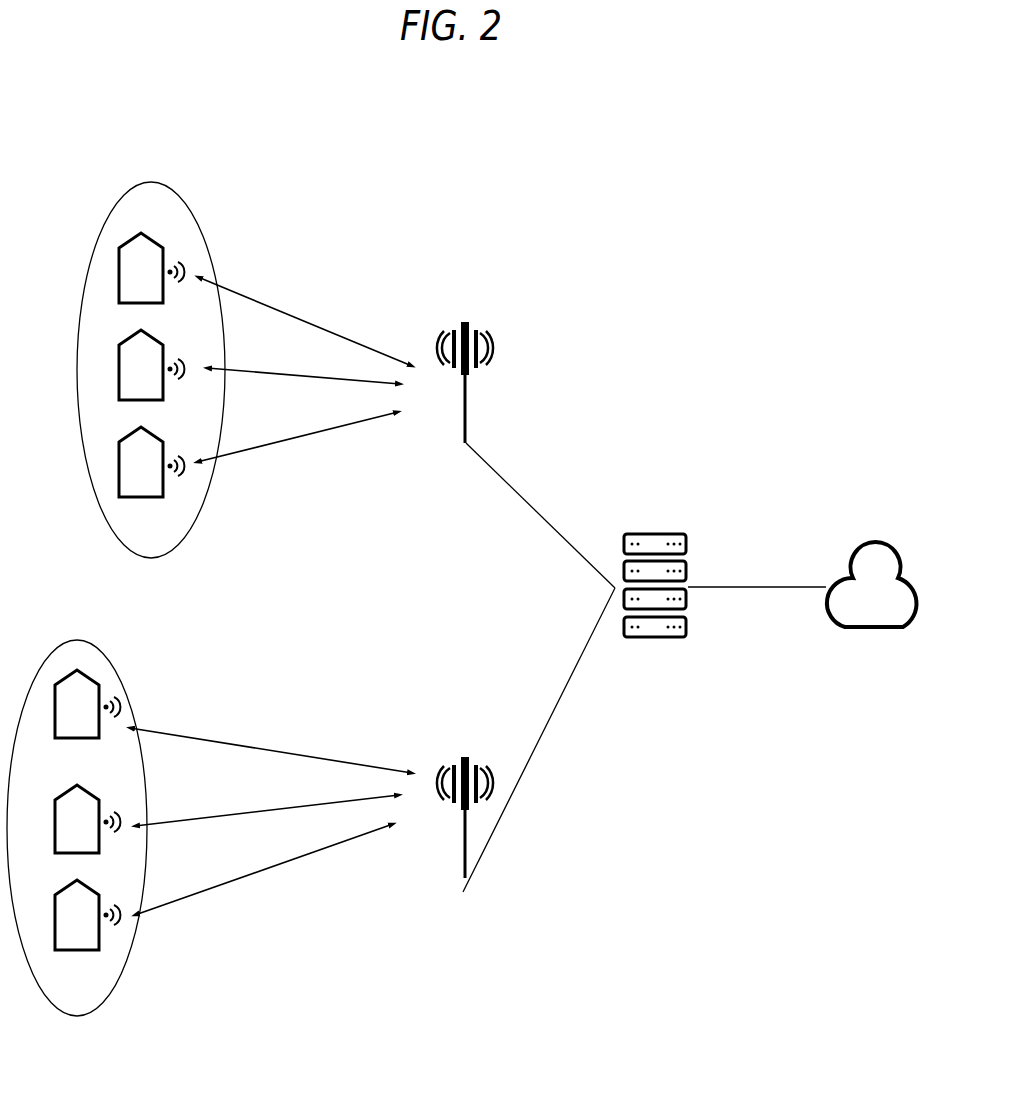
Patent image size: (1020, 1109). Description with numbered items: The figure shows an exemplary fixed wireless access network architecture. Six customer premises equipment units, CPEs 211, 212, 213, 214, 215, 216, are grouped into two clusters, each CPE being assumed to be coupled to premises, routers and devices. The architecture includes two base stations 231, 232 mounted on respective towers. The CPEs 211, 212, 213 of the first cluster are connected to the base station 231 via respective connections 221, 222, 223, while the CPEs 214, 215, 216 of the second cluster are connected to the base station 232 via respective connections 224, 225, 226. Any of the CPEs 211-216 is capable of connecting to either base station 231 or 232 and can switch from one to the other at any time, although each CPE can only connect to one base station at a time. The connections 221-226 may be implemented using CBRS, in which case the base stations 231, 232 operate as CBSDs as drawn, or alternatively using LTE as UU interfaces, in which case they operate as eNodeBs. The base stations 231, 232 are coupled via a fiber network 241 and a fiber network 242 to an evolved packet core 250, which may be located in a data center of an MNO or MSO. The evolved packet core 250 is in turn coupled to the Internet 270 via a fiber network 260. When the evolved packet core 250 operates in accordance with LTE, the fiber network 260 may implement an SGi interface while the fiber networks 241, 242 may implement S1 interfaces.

The CPE 211 is at (157, 273).
The CPE 212 is at (157, 370).
The CPE 213 is at (157, 468).
The CPE 214 is at (93, 708).
The CPE 215 is at (93, 823).
The CPE 216 is at (93, 915).
The connection 221 is at (330, 313).
The connection 222 is at (330, 368).
The connection 223 is at (330, 420).
The connection 224 is at (291, 738).
The connection 225 is at (291, 798).
The connection 226 is at (291, 853).
The base station 231 is at (449, 400).
The base station 232 is at (449, 828).
The fiber network 241 is at (562, 433).
The fiber network 242 is at (580, 762).
The evolved packet core 250 is at (649, 666).
The fiber network 260 is at (759, 527).
The Internet 270 is at (885, 595).